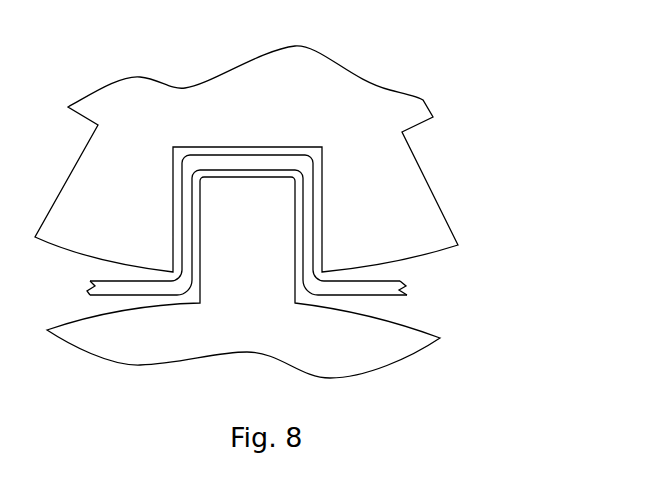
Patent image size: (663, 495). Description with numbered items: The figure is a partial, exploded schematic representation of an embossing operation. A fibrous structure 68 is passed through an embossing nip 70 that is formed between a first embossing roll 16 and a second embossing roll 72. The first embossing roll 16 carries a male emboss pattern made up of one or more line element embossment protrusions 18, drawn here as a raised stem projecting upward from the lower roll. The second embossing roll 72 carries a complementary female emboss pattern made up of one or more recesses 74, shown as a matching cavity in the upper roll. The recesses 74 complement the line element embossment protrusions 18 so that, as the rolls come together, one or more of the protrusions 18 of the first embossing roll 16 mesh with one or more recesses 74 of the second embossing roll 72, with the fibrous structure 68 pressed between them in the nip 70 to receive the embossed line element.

The first embossing roll 16 is at (260, 315).
The line element embossment protrusions 18 is at (244, 218).
The fibrous structure 68 is at (353, 283).
The embossing nip 70 is at (303, 159).
The second embossing roll 72 is at (257, 115).
The recesses 74 is at (63, 134).